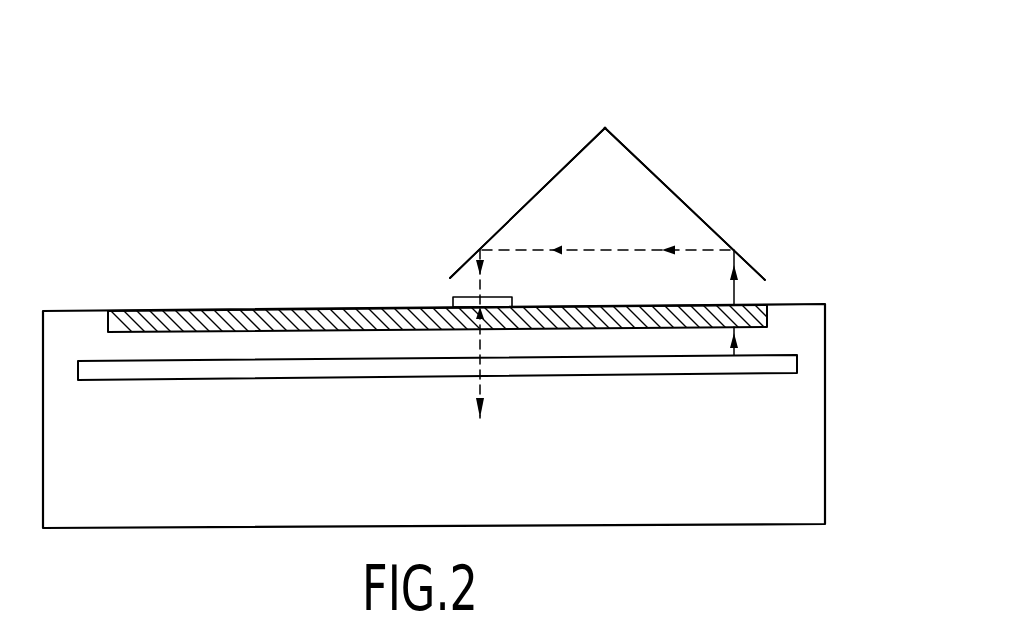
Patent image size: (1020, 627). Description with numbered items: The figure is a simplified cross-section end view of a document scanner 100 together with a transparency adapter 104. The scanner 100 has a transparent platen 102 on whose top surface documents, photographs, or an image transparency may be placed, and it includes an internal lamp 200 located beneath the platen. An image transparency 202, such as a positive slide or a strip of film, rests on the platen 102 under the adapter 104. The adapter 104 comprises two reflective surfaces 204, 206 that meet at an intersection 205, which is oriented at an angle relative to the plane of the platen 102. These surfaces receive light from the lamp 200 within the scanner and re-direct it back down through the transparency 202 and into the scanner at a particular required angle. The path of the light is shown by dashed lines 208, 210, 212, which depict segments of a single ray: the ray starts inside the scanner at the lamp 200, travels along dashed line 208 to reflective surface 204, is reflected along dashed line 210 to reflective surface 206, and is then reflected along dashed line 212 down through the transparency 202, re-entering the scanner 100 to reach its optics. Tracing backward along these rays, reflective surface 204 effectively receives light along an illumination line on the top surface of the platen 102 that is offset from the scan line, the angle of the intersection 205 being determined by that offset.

The scanner 100 is at (125, 510).
The transparent platen 102 is at (137, 311).
The adapter 104 is at (750, 146).
The internal lamp 200 is at (198, 380).
The image transparency 202 is at (512, 301).
The reflective surface 204 is at (667, 183).
The intersection of the reflective planes 205 is at (605, 128).
The reflective surface 206 is at (527, 202).
The dashed line 208 is at (747, 283).
The dashed line 210 is at (609, 250).
The dashed line 212 is at (480, 383).